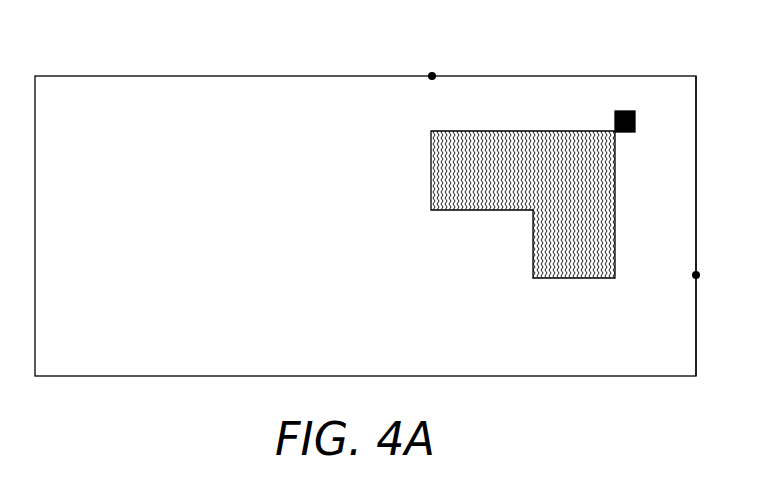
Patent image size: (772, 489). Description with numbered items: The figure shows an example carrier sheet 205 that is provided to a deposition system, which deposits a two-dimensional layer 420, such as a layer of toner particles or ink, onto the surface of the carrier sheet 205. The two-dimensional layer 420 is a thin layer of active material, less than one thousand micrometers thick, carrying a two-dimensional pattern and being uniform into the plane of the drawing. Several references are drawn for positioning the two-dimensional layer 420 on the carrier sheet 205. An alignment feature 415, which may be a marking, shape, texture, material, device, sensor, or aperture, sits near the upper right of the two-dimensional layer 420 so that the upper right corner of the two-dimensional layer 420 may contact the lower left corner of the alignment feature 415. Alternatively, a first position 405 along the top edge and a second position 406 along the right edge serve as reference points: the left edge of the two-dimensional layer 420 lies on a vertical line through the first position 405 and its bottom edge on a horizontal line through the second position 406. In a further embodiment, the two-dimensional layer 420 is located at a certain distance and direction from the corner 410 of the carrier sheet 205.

The carrier sheet 205 is at (171, 377).
The first position 405 is at (432, 58).
The second position 406 is at (712, 275).
The corner 410 is at (696, 62).
The alignment feature 415 is at (627, 144).
The 2D layer 420 is at (516, 212).